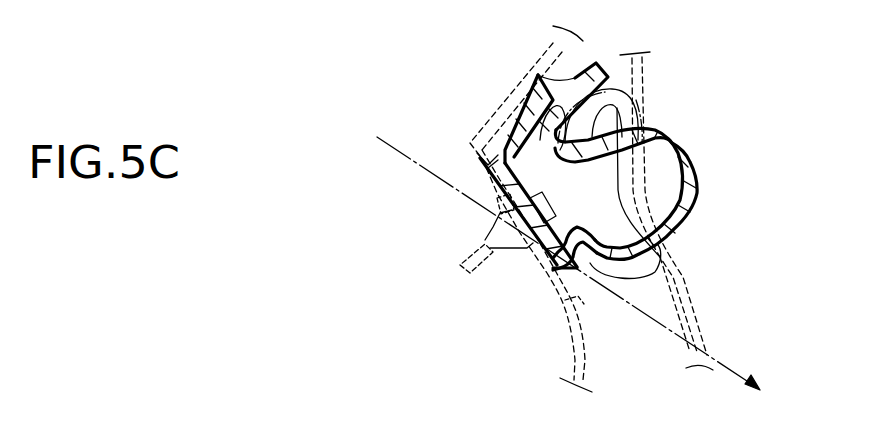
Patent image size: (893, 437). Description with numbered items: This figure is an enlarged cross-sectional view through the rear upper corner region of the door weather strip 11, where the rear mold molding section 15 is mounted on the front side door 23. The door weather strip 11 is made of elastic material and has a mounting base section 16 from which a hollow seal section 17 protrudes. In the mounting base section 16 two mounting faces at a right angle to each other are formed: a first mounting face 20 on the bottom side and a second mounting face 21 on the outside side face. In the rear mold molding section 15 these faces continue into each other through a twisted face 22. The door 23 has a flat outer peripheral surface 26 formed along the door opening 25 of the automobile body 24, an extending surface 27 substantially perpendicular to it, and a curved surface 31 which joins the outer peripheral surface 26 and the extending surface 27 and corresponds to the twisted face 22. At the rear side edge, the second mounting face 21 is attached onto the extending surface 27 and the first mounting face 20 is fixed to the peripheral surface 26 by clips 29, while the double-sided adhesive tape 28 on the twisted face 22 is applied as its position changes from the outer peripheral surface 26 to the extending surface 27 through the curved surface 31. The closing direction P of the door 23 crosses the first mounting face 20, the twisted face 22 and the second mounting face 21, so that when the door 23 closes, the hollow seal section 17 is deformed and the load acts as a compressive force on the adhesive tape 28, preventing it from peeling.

The door weather strip 11 is at (720, 106).
The rear mold molding section 15 is at (698, 162).
The mounting base section 16 is at (549, 248).
The hollow seal section 17 is at (698, 206).
The first mounting face 20 is at (498, 217).
The second mounting face 21 is at (513, 100).
The twisted face 22 is at (497, 132).
The front side door 23 is at (585, 350).
The automobile body 24 is at (703, 318).
The door opening 25 is at (673, 278).
The outer peripheral surface 26 is at (570, 320).
The extending surface 27 is at (548, 52).
The double-sided adhesive tape 28 is at (482, 158).
The clips 29 is at (448, 283).
The curved surface 31 is at (497, 162).
The direction of closing the door P is at (730, 367).